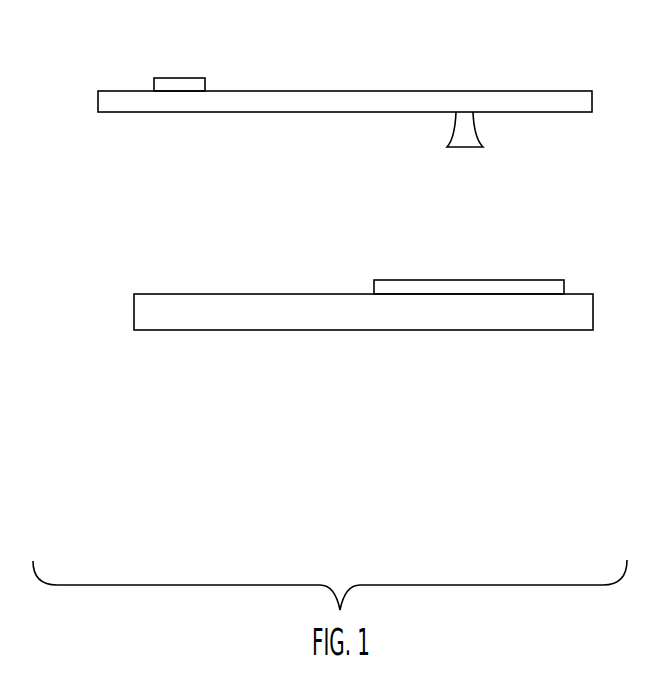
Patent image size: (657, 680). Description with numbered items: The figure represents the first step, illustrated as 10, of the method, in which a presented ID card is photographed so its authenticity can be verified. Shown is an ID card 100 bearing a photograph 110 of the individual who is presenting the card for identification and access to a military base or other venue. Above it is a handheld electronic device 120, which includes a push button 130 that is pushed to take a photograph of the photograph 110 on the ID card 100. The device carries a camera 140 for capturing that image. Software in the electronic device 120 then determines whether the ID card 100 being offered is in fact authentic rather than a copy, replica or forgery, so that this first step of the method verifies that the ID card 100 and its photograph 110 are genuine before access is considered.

The Step 1 10 is at (364, 448).
The ID card 100 is at (121, 320).
The photograph 110 is at (560, 271).
The electronic device 120 is at (87, 105).
The push button 130 is at (185, 68).
The camera 140 is at (497, 131).